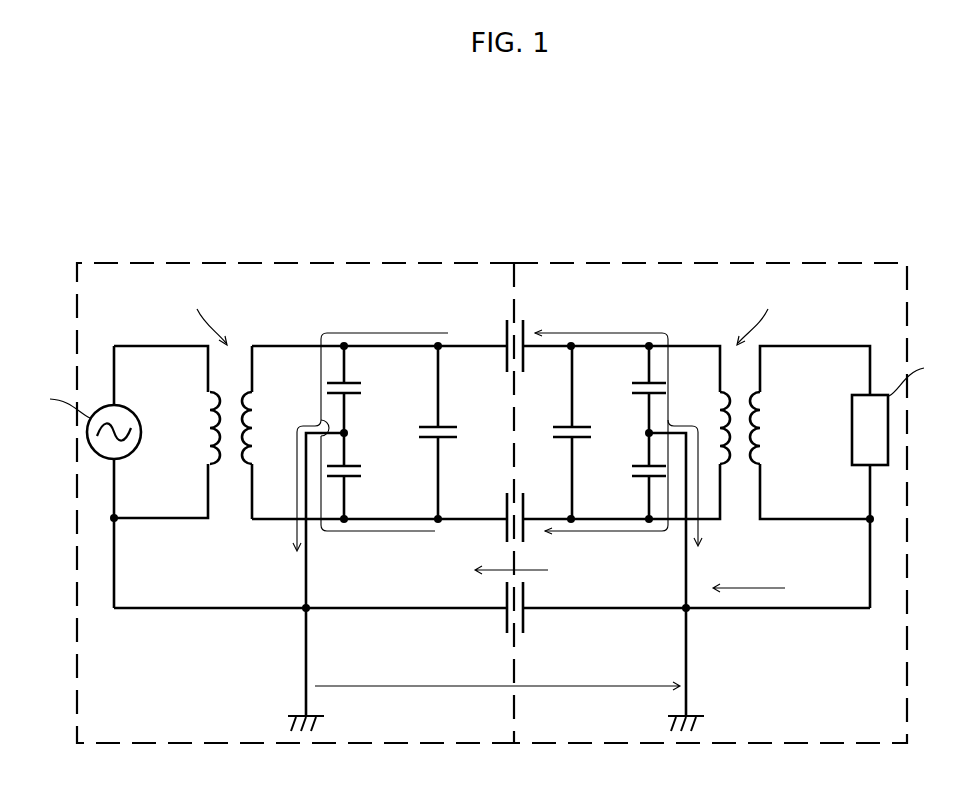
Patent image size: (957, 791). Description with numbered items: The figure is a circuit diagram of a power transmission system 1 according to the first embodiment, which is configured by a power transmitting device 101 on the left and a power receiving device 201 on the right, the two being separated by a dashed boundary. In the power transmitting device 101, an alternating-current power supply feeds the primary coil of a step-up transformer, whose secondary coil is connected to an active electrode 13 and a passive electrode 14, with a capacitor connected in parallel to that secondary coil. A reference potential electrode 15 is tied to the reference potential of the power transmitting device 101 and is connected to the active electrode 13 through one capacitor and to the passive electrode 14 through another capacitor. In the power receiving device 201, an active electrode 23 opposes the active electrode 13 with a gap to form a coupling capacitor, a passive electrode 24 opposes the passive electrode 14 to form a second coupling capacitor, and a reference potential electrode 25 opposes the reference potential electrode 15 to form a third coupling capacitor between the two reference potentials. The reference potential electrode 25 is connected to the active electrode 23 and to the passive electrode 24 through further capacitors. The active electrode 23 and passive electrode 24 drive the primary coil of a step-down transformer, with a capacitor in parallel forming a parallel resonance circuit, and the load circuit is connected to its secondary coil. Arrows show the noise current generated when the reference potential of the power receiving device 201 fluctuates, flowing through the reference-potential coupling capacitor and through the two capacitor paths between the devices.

The power transmission system 1 is at (128, 183).
The power transmitting device 101 is at (84, 266).
The power receiving device 201 is at (910, 266).
The active electrode 13 is at (505, 327).
The active electrode 23 is at (525, 327).
The passive electrode 14 is at (505, 535).
The passive electrode 24 is at (525, 535).
The reference potential electrode 15 is at (505, 627).
The reference potential electrode 25 is at (525, 627).